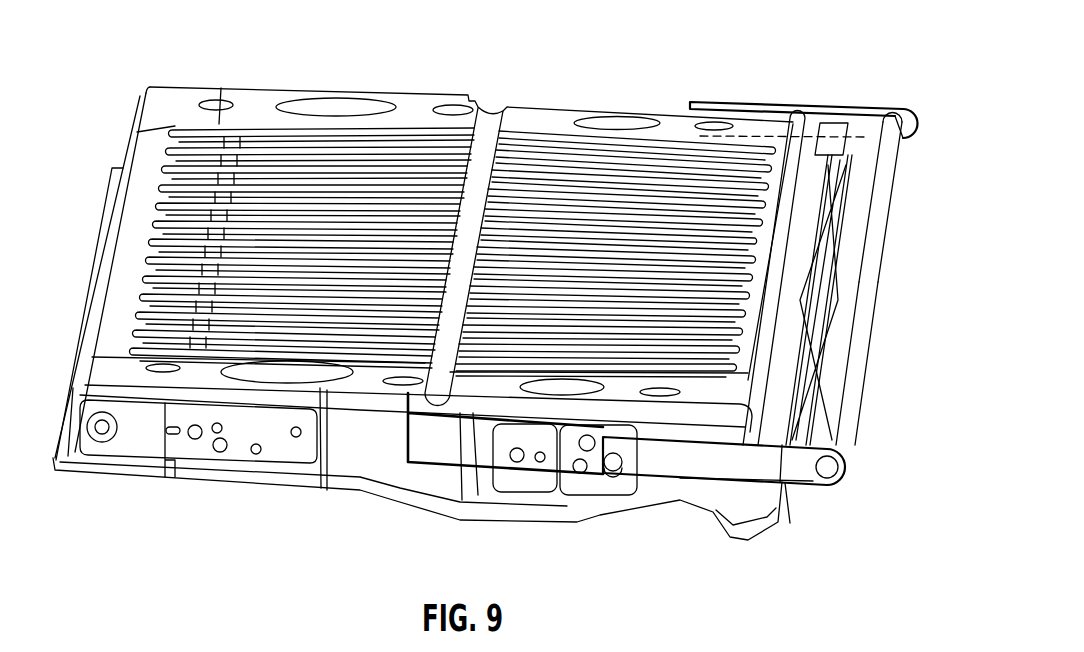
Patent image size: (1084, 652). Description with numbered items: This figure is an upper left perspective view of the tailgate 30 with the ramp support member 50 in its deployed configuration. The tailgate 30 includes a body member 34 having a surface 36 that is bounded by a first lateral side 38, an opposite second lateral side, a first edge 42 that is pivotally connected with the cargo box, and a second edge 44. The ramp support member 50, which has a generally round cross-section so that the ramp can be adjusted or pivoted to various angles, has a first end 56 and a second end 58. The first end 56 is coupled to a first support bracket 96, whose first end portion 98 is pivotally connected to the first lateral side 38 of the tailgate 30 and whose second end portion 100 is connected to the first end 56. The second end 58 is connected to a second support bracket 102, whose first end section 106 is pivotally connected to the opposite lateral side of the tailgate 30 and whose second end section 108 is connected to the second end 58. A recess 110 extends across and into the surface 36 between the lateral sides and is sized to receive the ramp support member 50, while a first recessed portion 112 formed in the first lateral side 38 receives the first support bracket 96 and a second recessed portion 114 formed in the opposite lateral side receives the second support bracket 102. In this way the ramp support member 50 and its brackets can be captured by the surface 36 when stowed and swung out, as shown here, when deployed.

The tailgate 30 is at (173, 70).
The body member 34 is at (246, 492).
The surface 36 is at (327, 217).
The first lateral side 38 is at (373, 480).
The first edge 42 is at (105, 266).
The second edge 44 is at (796, 244).
The ramp support member 50 is at (870, 335).
The first end 56 is at (842, 408).
The second end 58 is at (886, 178).
The first support bracket 96 is at (820, 490).
The first end portion 98 is at (633, 477).
The second end portion 100 is at (848, 460).
The second support bracket 102 is at (842, 97).
The first end section 106 is at (707, 99).
The second end section 108 is at (906, 114).
The recess 110 is at (493, 111).
The first recessed portion 112 is at (440, 445).
The second recessed portion 114 is at (590, 108).